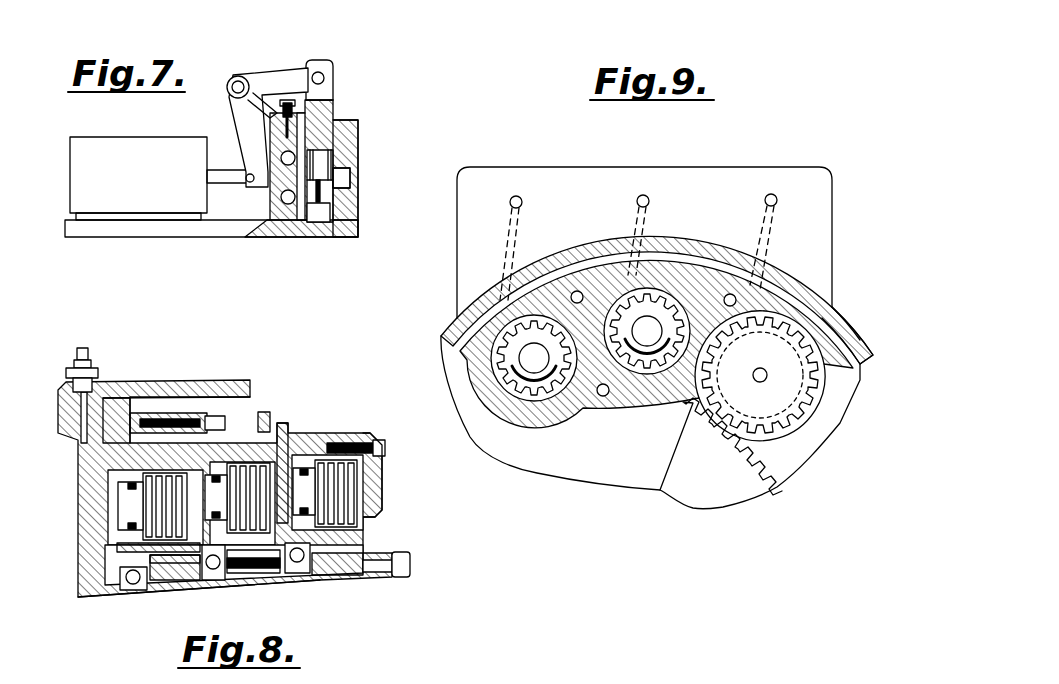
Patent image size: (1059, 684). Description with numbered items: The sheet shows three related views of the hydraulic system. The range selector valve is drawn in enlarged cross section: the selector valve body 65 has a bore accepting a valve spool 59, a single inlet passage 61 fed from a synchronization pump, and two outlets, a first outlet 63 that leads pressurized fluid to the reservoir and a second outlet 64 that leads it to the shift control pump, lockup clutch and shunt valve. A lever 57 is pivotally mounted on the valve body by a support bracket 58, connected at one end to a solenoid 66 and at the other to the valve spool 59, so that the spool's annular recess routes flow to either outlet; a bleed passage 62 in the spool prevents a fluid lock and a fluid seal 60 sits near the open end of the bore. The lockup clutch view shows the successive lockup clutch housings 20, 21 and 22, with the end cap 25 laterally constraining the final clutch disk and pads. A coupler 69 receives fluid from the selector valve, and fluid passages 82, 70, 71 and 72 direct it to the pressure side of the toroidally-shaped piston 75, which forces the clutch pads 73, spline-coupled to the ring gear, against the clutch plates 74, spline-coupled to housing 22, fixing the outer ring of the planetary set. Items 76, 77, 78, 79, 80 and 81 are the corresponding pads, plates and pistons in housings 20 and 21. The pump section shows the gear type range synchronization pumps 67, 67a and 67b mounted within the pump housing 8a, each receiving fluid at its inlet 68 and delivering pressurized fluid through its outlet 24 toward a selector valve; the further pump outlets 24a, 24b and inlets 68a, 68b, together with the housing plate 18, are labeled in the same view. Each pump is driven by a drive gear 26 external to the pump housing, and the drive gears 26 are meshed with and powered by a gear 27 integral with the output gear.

In FIG. 7, the lever 57 is at (257, 70).
In FIG. 7, the support bracket 58 is at (270, 110).
In FIG. 7, the valve spool 59 is at (333, 100).
In FIG. 7, the fluid seal 60 is at (338, 135).
In FIG. 7, the inlet passage 61 is at (333, 177).
In FIG. 7, the bleed passage 62 is at (333, 207).
In FIG. 7, the first outlet 63 is at (295, 230).
In FIG. 7, the second outlet 64 is at (285, 172).
In FIG. 7, the selector valve body 65 is at (155, 238).
In FIG. 7, the solenoid 66 is at (72, 180).
In FIG. 8, the coupler 69 is at (75, 370).
In FIG. 8, the fluid passage 70 is at (128, 412).
In FIG. 8, the lockup clutch housing 20 is at (168, 410).
In FIG. 8, the fluid passage 71 is at (228, 440).
In FIG. 8, the lockup clutch housing 21 is at (260, 420).
In FIG. 8, the fluid passage 72 is at (289, 430).
In FIG. 8, the lockup clutch housing 22 is at (328, 432).
In FIG. 8, the end cap 25 is at (382, 473).
In FIG. 8, the clutch pads 73 is at (357, 495).
In FIG. 8, the clutch plates 74 is at (394, 565).
In FIG. 8, the toroidally-shaped piston 75 is at (327, 545).
In FIG. 8, the clutch pads 76 is at (275, 557).
In FIG. 8, the clutch plates 77 is at (257, 530).
In FIG. 8, the piston 78 is at (210, 562).
In FIG. 8, the clutch pads 79 is at (168, 560).
In FIG. 8, the clutch plates 80 is at (110, 590).
In FIG. 8, the piston 81 is at (78, 570).
In FIG. 8, the fluid passage 82 is at (77, 447).
In FIG. 9, the housing plate 18 is at (832, 227).
In FIG. 9, the pump outlet 24 is at (643, 195).
In FIG. 9, the mounting hole 24a is at (775, 195).
In FIG. 9, the mounting hole 24b is at (513, 197).
In FIG. 9, the range synchronization pump 67 is at (692, 267).
In FIG. 9, the range synchronization pump 67a is at (822, 303).
In FIG. 9, the range synchronization pump 67b is at (478, 340).
In FIG. 9, the pump housing 8a is at (822, 348).
In FIG. 9, the pump inlet 68 is at (660, 393).
In FIG. 9, the drive gear 68a is at (798, 387).
In FIG. 9, the pump gear 68b is at (567, 425).
In FIG. 9, the drive gear 26 is at (813, 412).
In FIG. 9, the gear 27 is at (767, 467).